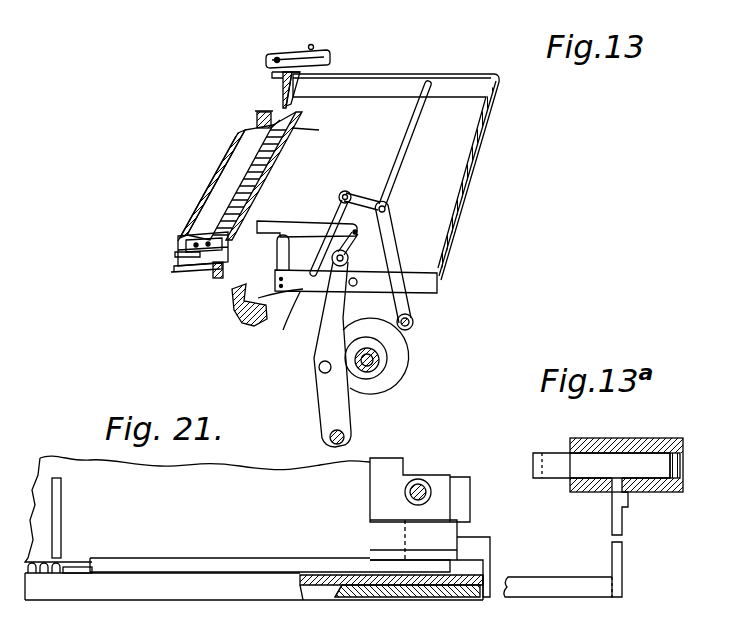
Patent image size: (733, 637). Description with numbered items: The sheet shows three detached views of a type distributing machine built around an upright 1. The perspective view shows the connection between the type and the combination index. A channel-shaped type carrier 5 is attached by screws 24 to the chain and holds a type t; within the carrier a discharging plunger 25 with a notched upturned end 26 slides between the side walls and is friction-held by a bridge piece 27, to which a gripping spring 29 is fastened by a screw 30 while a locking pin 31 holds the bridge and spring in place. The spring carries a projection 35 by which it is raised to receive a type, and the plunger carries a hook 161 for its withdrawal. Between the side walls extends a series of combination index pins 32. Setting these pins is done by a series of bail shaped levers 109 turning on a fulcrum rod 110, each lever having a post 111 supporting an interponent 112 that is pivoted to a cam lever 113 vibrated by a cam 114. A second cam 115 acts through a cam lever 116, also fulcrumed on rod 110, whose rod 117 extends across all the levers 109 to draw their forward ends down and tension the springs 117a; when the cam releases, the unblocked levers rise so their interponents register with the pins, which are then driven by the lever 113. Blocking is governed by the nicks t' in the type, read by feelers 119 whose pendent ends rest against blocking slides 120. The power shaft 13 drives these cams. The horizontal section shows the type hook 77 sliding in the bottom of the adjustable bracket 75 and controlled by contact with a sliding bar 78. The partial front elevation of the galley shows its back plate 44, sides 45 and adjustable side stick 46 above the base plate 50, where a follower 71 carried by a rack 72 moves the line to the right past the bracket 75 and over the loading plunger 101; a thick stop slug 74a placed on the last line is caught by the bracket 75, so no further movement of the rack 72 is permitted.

In FIG. 13, the type t is at (310, 49).
In FIG. 13, the nicks t' is at (296, 39).
In FIG. 13, the feeler levers 119 is at (282, 88).
In FIG. 13, the blocking slide 120 is at (293, 90).
In FIG. 13, the upturned end 26 is at (255, 115).
In FIG. 13, the projection 35 is at (234, 140).
In FIG. 13, the type carriers 5 is at (228, 173).
In FIG. 13, the gripping spring 29 is at (225, 180).
In FIG. 13, the locking pin 31 is at (203, 237).
In FIG. 13, the screw 30 is at (197, 248).
In FIG. 13, the bridge piece 27 is at (183, 253).
In FIG. 13, the discharging plunger 25 is at (180, 272).
In FIG. 13, the hook 161 is at (217, 273).
In FIG. 13, the upright 1 is at (234, 316).
In FIG. 13, the springs 117a is at (278, 320).
In FIG. 13, the screws 24 is at (292, 142).
In FIG. 13, the pins 32 is at (265, 203).
In FIG. 13, the rod 117 is at (329, 201).
In FIG. 13, the interponent 112 is at (304, 228).
In FIG. 13, the post 111 is at (277, 252).
In FIG. 13, the fulcrum rod 110 is at (401, 172).
In FIG. 13, the cam lever 116 is at (388, 236).
In FIG. 13, the bail shaped levers 109 is at (466, 209).
In FIG. 13, the cam 115 is at (398, 343).
In FIG. 13, the cam 114 is at (388, 362).
In FIG. 13, the power shaft 13 is at (368, 384).
In FIG. 13, the cam lever 113 is at (320, 395).
In FIG. 21, the back plate 44 is at (200, 478).
In FIG. 21, the side stick 46 is at (62, 508).
In FIG. 21, the rack 72 is at (40, 548).
In FIG. 21, the follower 71 is at (75, 574).
In FIG. 21, the stop slug 74a is at (227, 560).
In FIG. 21, the base plate 50 is at (202, 594).
In FIG. 21, the sides 45 is at (378, 490).
In FIG. 21, the bracket 75 is at (441, 478).
In FIG. 13A, the bracket 75 is at (676, 438).
In FIG. 21, the type hook 77 is at (490, 542).
In FIG. 13A, the type hook 77 is at (548, 457).
In FIG. 21, the loading plunger 101 is at (366, 597).
In FIG. 13A, the sliding bar 78 is at (543, 580).